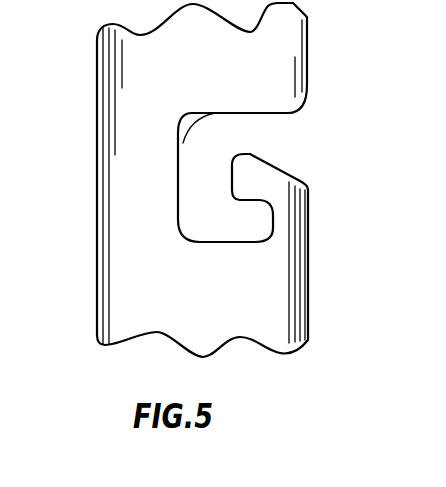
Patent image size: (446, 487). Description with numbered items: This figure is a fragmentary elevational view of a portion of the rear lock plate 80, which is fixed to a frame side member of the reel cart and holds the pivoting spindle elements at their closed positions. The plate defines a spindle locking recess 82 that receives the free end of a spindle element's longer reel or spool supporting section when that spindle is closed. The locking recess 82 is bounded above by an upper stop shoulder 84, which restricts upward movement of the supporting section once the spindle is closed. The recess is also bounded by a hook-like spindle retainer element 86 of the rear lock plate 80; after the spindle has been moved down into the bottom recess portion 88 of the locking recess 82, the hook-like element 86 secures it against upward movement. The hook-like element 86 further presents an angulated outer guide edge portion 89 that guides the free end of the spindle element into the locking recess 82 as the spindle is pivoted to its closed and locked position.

The rear lock plate 80 is at (145, 53).
The spindle locking recess 82 is at (229, 134).
The upper stop shoulder 84 is at (178, 144).
The hook-like spindle retainer element 86 is at (235, 178).
The bottom recess portion 88 is at (253, 222).
The angulated outer guide edge portion 89 is at (273, 165).